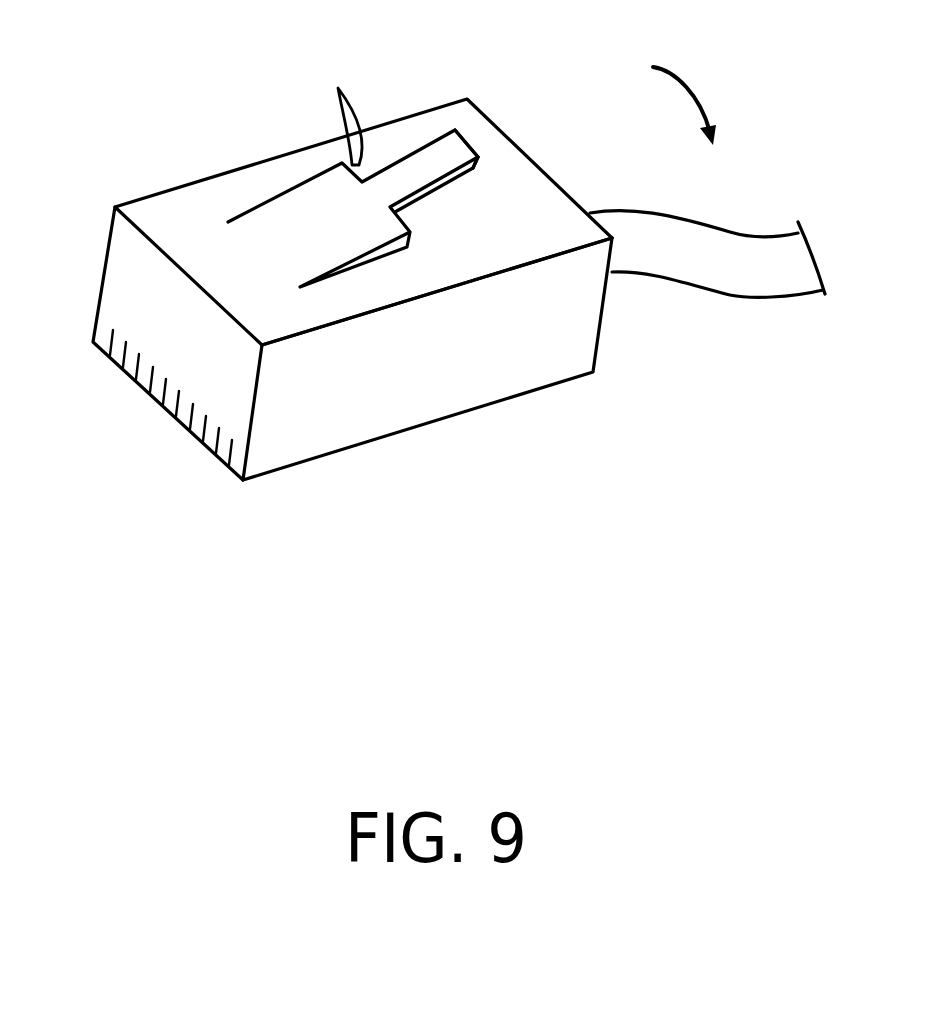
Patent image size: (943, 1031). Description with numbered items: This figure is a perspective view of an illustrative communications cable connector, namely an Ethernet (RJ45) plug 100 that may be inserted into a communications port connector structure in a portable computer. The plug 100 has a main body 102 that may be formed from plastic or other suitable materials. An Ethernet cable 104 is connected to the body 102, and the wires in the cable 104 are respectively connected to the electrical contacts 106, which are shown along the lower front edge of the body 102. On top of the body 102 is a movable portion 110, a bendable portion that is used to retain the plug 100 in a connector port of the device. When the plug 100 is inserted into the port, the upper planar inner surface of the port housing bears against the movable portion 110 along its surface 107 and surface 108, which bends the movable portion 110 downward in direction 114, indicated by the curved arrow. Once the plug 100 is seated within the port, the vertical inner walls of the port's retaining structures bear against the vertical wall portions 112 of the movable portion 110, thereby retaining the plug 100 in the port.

The plug 100 is at (442, 342).
The body 102 is at (418, 402).
The Ethernet cable 104 is at (698, 265).
The electrical contacts 106 is at (140, 398).
The surface 107 is at (288, 212).
The surface 108 is at (405, 155).
The movable portion 110 is at (481, 132).
The vertical wall portions 112 is at (334, 104).
The direction 114 is at (697, 92).